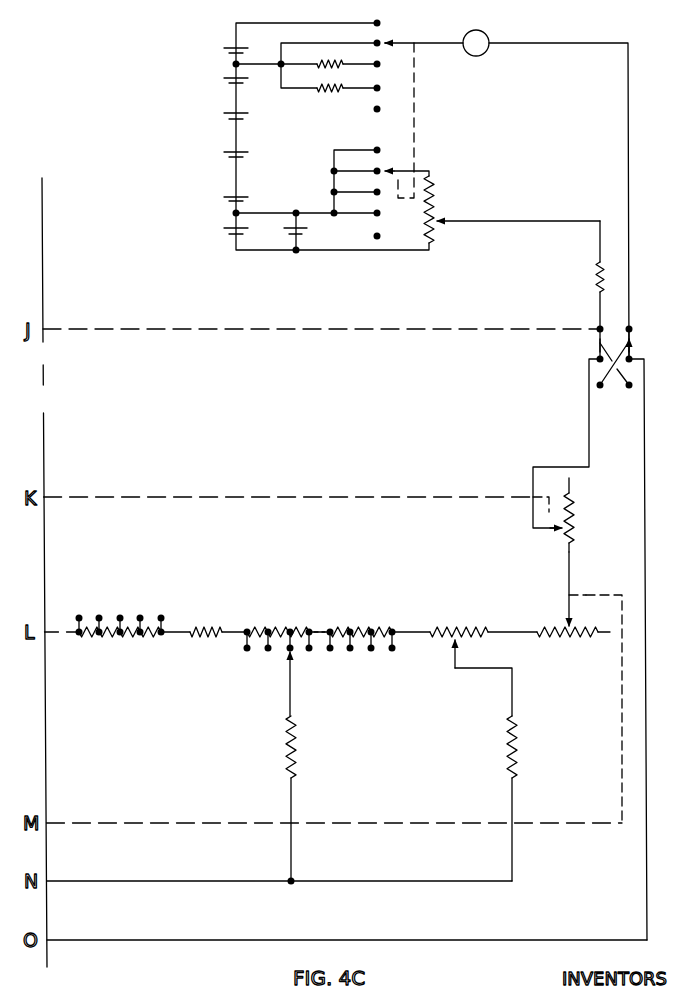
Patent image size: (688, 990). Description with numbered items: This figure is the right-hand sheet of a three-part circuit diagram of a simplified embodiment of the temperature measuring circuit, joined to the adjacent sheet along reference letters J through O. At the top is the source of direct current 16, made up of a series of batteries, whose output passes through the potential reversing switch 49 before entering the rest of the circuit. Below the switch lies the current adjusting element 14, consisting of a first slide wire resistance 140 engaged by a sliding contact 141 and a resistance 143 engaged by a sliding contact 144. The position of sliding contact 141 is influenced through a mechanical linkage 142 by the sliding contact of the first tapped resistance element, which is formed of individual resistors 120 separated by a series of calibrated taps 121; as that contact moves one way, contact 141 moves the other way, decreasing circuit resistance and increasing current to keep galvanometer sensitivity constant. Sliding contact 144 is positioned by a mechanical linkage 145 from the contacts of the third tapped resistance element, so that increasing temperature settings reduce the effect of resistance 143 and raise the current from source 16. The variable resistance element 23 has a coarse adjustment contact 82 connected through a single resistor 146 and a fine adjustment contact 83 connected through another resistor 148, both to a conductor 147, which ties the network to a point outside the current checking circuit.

The source of direct current 16 is at (212, 158).
The potential reversing switch 49 is at (632, 352).
The mechanical linkage 145 is at (324, 493).
The resistance 143 is at (577, 529).
The sliding contact 144 is at (552, 530).
The current adjusting element 14 is at (543, 597).
The sliding contact 141 is at (571, 563).
The mechanical linkage 142 is at (620, 754).
The taps 121 is at (167, 625).
The individual resistors 120 is at (91, 640).
The variable resistance element 23 is at (322, 656).
The coarse adjustment contact 82 is at (287, 705).
The fine adjustment contact 83 is at (467, 686).
The resistor 146 is at (287, 748).
The resistor 148 is at (503, 741).
The conductor 147 is at (188, 878).
The first slide wire resistance 140 is at (569, 640).